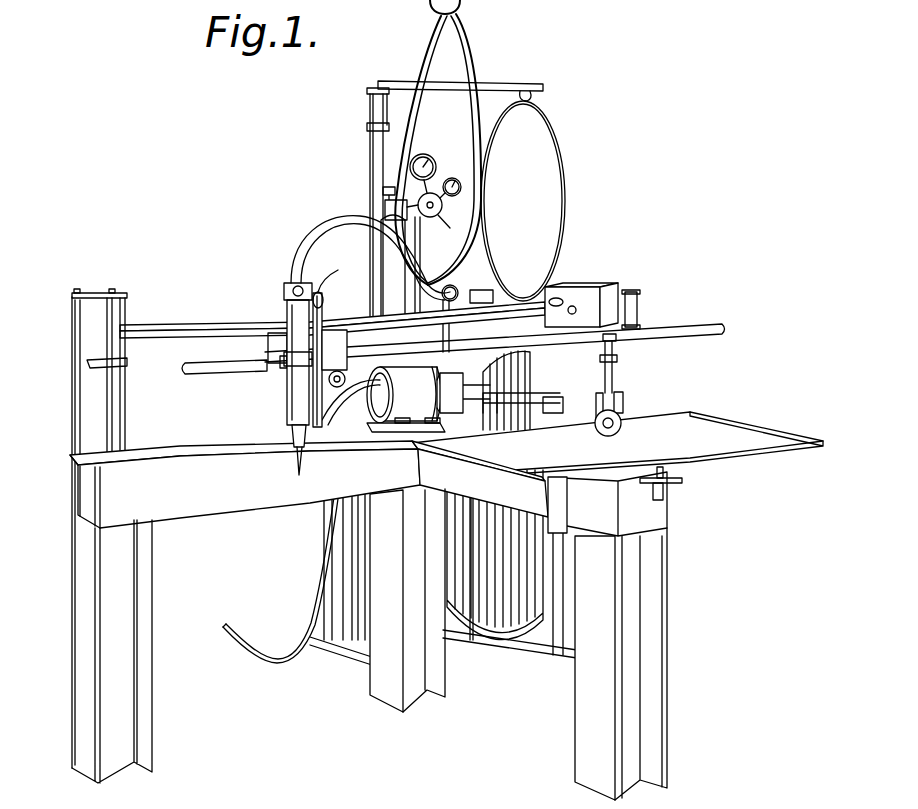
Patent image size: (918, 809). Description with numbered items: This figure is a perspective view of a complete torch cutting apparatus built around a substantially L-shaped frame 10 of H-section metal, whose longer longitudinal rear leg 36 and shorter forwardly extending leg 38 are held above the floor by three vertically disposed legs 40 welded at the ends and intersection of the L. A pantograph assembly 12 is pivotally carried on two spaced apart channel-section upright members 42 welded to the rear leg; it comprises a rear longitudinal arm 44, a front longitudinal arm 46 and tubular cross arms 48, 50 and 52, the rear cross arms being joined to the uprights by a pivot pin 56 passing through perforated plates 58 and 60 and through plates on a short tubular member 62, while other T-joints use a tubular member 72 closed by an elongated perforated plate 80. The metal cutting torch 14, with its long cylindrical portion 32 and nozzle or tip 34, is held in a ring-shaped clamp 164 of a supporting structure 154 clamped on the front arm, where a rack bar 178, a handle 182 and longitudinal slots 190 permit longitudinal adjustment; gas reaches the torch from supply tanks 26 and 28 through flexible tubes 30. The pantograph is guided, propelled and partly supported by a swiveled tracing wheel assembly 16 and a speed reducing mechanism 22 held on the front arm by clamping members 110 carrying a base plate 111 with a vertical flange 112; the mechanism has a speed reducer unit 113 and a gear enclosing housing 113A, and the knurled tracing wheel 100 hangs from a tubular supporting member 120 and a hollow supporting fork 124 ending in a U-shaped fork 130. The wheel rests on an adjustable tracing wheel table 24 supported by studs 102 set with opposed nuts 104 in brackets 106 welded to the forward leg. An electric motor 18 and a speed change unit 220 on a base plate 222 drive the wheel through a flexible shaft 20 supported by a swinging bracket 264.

The L-shaped frame 10 is at (227, 512).
The pantograph assembly 12 is at (205, 324).
The metal cutting torch 14 is at (287, 309).
The swiveled tracing wheel assembly 16 is at (612, 379).
The electric motor 18 is at (380, 412).
The flexible shaft 20 is at (566, 205).
The speed reducing mechanism 22 is at (615, 288).
The tracing wheel table 24 is at (735, 418).
The supply tank 26 is at (362, 290).
The supply tank 28 is at (520, 371).
The flexible tubes 30 is at (470, 42).
The cylindrical portion 32 is at (283, 401).
The nozzle or tip 34 is at (290, 461).
The longitudinal rear leg 36 is at (290, 498).
The forwardly extending leg 38 is at (645, 521).
The vertically disposed legs 40 is at (152, 665).
The upright members 42 is at (77, 398).
The rear longitudinal arm 44 is at (503, 319).
The front longitudinal arm 46 is at (706, 324).
The cross arm 48 is at (163, 323).
The cross arm 50 is at (357, 384).
The cross arm 52 is at (462, 282).
The pivot pin 56 is at (113, 289).
The perforated plate 58 is at (79, 289).
The perforated plate 60 is at (95, 365).
The tubular member 62 is at (112, 331).
The tubular member 72 is at (638, 300).
The perforated plate 80 is at (632, 292).
The tracing wheel 100 is at (622, 431).
The studs 102 is at (663, 468).
The opposed nuts 104 is at (677, 482).
The brackets 106 is at (548, 498).
The clamping members 110 is at (540, 402).
The base plate 111 is at (640, 322).
The vertical flange 112 is at (580, 286).
The speed reducer unit 113 is at (592, 290).
The gear enclosing housing 113A is at (593, 302).
The tubular supporting member 120 is at (617, 359).
The tracing wheel supporting fork 124 is at (592, 428).
The fork 130 is at (630, 417).
The supporting structure 154 is at (278, 334).
The ring-shaped clamp 164 is at (281, 372).
The rack bar 178 is at (281, 362).
The handle 182 is at (300, 456).
The longitudinal slots 190 is at (300, 309).
The speed change unit 220 is at (548, 410).
The base plate 222 is at (396, 436).
The swinging bracket 264 is at (497, 83).